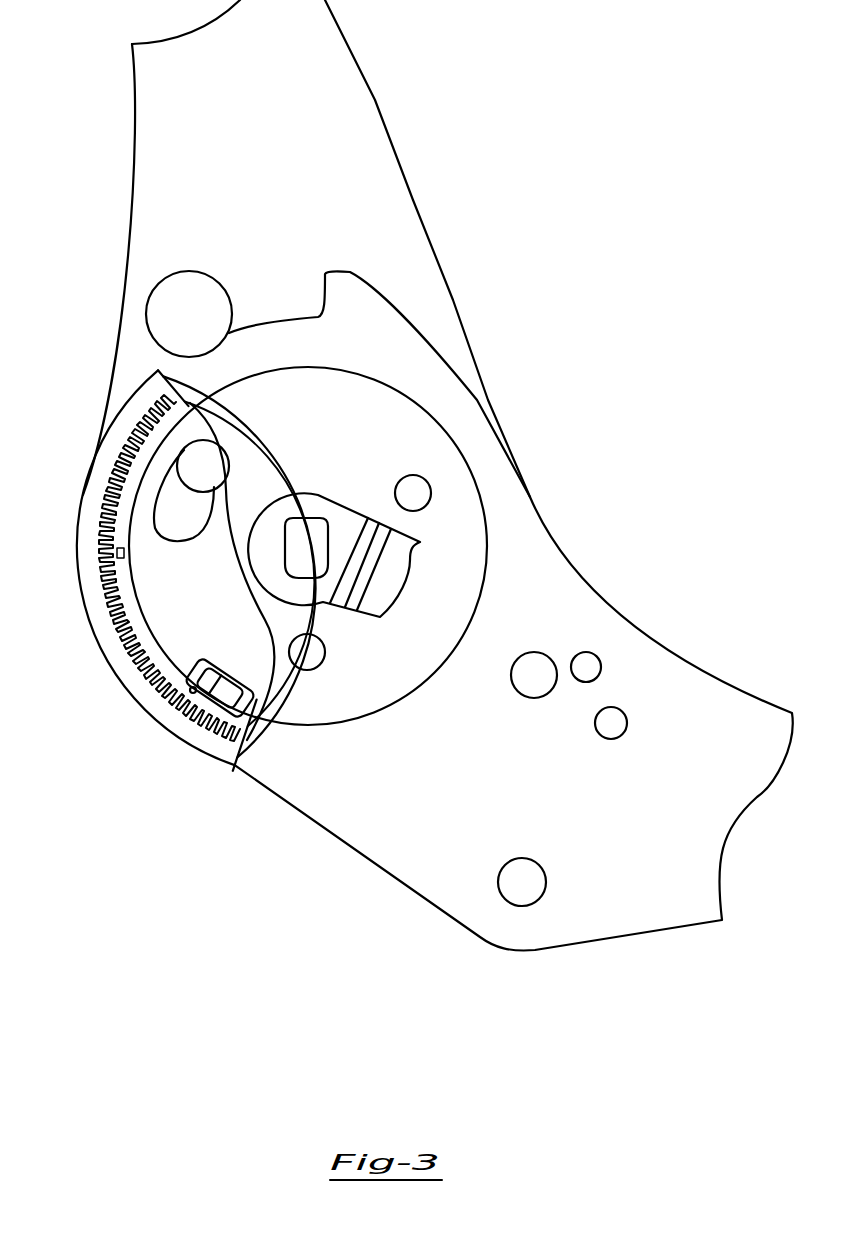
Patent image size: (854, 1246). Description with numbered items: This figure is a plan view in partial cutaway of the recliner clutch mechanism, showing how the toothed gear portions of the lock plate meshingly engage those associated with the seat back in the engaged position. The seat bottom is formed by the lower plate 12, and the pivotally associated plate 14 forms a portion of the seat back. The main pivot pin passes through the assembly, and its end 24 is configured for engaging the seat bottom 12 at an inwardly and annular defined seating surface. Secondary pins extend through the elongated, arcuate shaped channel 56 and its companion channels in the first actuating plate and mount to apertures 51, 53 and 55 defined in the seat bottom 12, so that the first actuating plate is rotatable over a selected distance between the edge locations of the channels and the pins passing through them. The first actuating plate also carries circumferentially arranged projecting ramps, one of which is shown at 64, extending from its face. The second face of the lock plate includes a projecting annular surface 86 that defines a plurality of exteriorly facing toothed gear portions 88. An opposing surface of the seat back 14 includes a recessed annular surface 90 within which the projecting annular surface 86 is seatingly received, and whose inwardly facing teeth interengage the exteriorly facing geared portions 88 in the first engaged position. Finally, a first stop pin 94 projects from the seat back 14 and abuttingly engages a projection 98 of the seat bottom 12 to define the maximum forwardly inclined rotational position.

The lower plate 12 is at (383, 855).
The plate 14 is at (150, 127).
The end of the main pivot pin 24 is at (308, 547).
The aperture 51 is at (307, 658).
The aperture 53 is at (173, 538).
The aperture 55 is at (413, 493).
The arcuate shaped channel 56 is at (205, 465).
The ramp 64 is at (193, 667).
The projecting annular surface 86 is at (122, 527).
The toothed gear portions 88 is at (137, 428).
The recessed annular surface 90 is at (120, 458).
The first stop pin 94 is at (192, 312).
The projection 98 is at (341, 287).